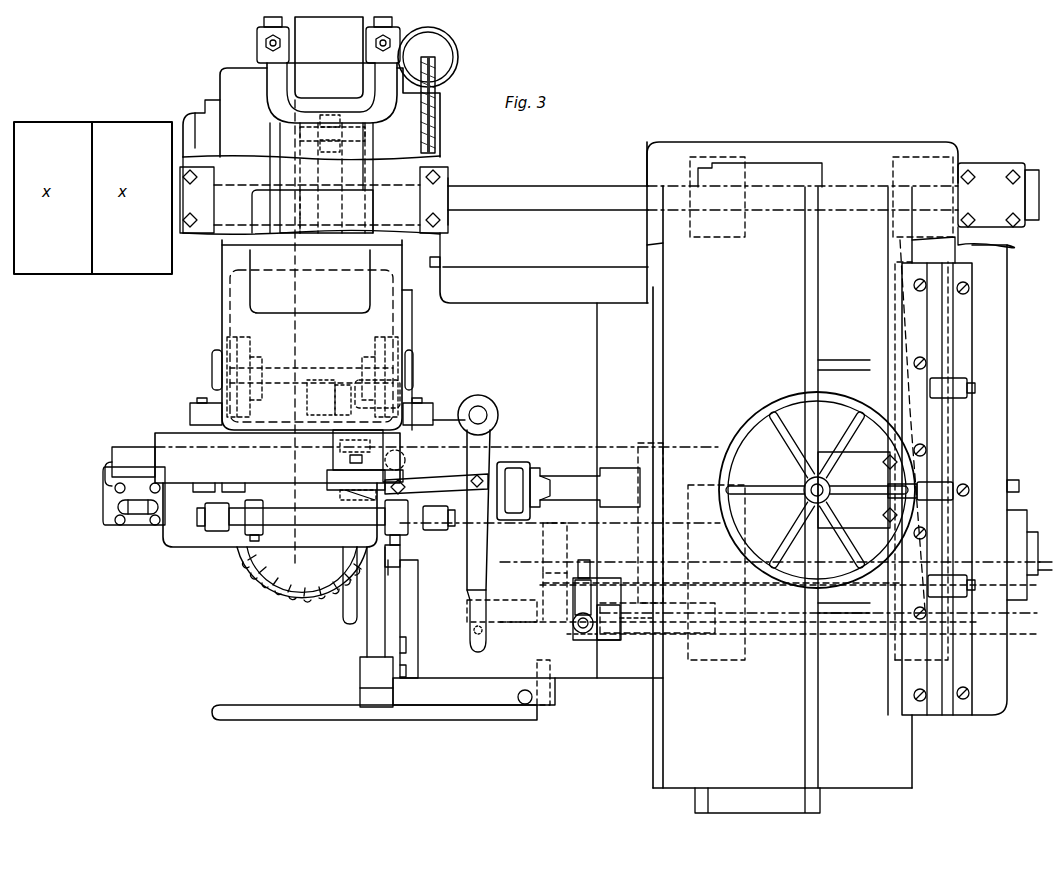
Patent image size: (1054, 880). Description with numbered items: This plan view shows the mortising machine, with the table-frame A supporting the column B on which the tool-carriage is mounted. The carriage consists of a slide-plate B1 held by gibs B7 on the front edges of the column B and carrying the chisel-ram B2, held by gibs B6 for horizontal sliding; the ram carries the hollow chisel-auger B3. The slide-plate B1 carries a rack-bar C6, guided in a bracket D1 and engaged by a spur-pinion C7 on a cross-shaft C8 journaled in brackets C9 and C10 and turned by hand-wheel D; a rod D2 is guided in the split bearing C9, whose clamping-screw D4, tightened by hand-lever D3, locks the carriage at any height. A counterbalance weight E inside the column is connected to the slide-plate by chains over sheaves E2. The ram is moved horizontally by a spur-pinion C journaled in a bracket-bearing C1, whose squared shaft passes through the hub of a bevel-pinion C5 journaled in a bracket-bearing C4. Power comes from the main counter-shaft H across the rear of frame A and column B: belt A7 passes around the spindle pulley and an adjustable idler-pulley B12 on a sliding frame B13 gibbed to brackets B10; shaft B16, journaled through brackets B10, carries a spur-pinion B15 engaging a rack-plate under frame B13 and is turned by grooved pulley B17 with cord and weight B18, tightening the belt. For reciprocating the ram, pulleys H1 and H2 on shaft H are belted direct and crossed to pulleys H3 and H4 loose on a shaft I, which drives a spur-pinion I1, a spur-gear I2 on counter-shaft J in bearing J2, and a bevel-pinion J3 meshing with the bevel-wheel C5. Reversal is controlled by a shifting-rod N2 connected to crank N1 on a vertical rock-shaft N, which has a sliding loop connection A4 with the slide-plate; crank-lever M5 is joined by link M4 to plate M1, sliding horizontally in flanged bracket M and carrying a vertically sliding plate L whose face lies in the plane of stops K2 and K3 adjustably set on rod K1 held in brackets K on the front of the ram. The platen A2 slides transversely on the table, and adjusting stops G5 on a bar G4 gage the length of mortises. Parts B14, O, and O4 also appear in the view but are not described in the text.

The adjustable idler-pulley B12 is at (329, 57).
The cord and attached weight B18 is at (440, 50).
The external grooved pulley B17 is at (437, 100).
The brackets B10 is at (454, 131).
The spur-pinion B15 is at (330, 122).
The short transverse shaft B16 is at (350, 135).
The slide B14 is at (330, 212).
The sliding frame B13 is at (282, 228).
The main-feed counter-shaft H is at (548, 201).
The table-frame A is at (597, 370).
The column B is at (312, 332).
The belt A7 is at (311, 336).
The weight E is at (390, 315).
The sheaves E2 is at (427, 347).
The rack-bar C6 is at (343, 390).
The spur-pinion C7 is at (395, 397).
The bracket D1 is at (340, 402).
The gibs B7 is at (311, 411).
The gibs B6 is at (240, 483).
The chisel-ram B2 is at (182, 535).
The brackets K is at (326, 517).
The rod K1 is at (307, 512).
The stop K2 is at (256, 520).
The stop K3 is at (398, 519).
The bevel-pinion C5 is at (272, 588).
The hand-lever D3 is at (345, 618).
The cross-shaft C8 is at (378, 602).
The bracket C10 is at (380, 678).
The counter-shaft J is at (532, 520).
The bearing J2 is at (410, 555).
The bevel-pinion J3 is at (391, 563).
The flanged bracket M is at (358, 450).
The central plate M1 is at (333, 488).
The outer plate L is at (345, 497).
The link M4 is at (436, 484).
The vertical rod D2 is at (405, 460).
The clamping-screw D4 is at (395, 475).
The loop-bracket A4 is at (482, 393).
The vertical rock-shaft N is at (478, 415).
The crank-lever M5 is at (470, 565).
The crank N1 is at (487, 600).
The bearing-block C9 is at (405, 428).
The slide-plate B1 is at (520, 466).
The hollow chisel-auger B3 is at (585, 487).
The spur-gear I2 is at (650, 522).
The bearing block O is at (584, 600).
The bracket-bearing C1 is at (630, 615).
The spur-pinion C is at (582, 637).
The shifting-rod N2 is at (985, 640).
The hand-wheel D is at (437, 699).
The roller O4 is at (533, 705).
The platen A2 is at (802, 477).
The belt-pulley H1 is at (717, 197).
The belt-pulley H2 is at (923, 192).
The belt-pulley H3 is at (716, 572).
The belt-pulley H4 is at (895, 661).
The rod or bar G4 is at (945, 338).
The bracket-bearing C4 is at (960, 445).
The adjusting stops G5 is at (931, 485).
The shaft I is at (817, 490).
The spur-pinion I1 is at (655, 585).